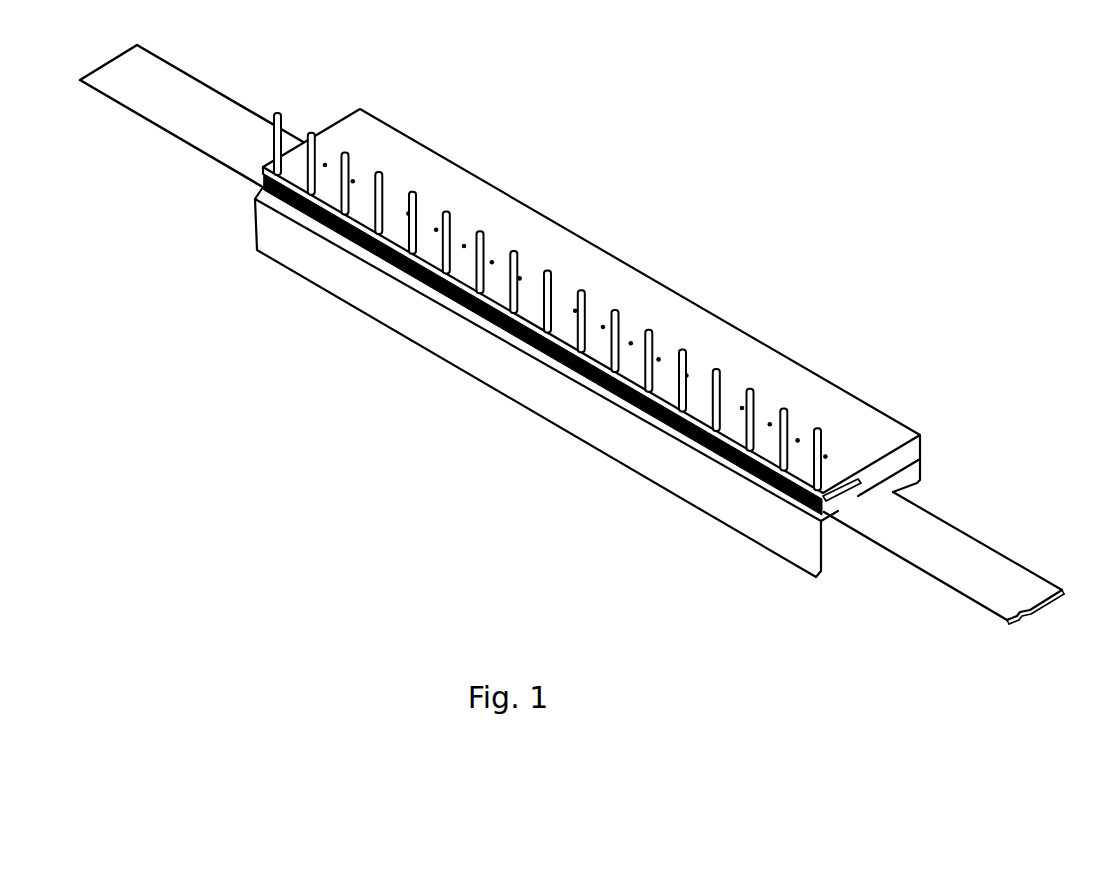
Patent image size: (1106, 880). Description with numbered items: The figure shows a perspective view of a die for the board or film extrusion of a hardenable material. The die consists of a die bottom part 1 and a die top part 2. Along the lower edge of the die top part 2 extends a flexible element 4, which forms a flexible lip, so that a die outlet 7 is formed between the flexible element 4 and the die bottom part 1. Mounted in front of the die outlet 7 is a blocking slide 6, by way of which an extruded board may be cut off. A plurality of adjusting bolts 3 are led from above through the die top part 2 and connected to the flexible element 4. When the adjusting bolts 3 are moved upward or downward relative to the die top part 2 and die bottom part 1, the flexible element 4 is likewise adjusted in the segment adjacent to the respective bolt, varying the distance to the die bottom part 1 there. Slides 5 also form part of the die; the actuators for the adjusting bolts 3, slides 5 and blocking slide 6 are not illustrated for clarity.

The die bottom part 1 is at (912, 473).
The die top part 2 is at (855, 420).
The adjusting bolts 3 is at (483, 240).
The flexible element 4 is at (840, 503).
The slides 5 is at (170, 101).
The blocking slide 6 is at (653, 456).
The die outlet 7 is at (583, 372).